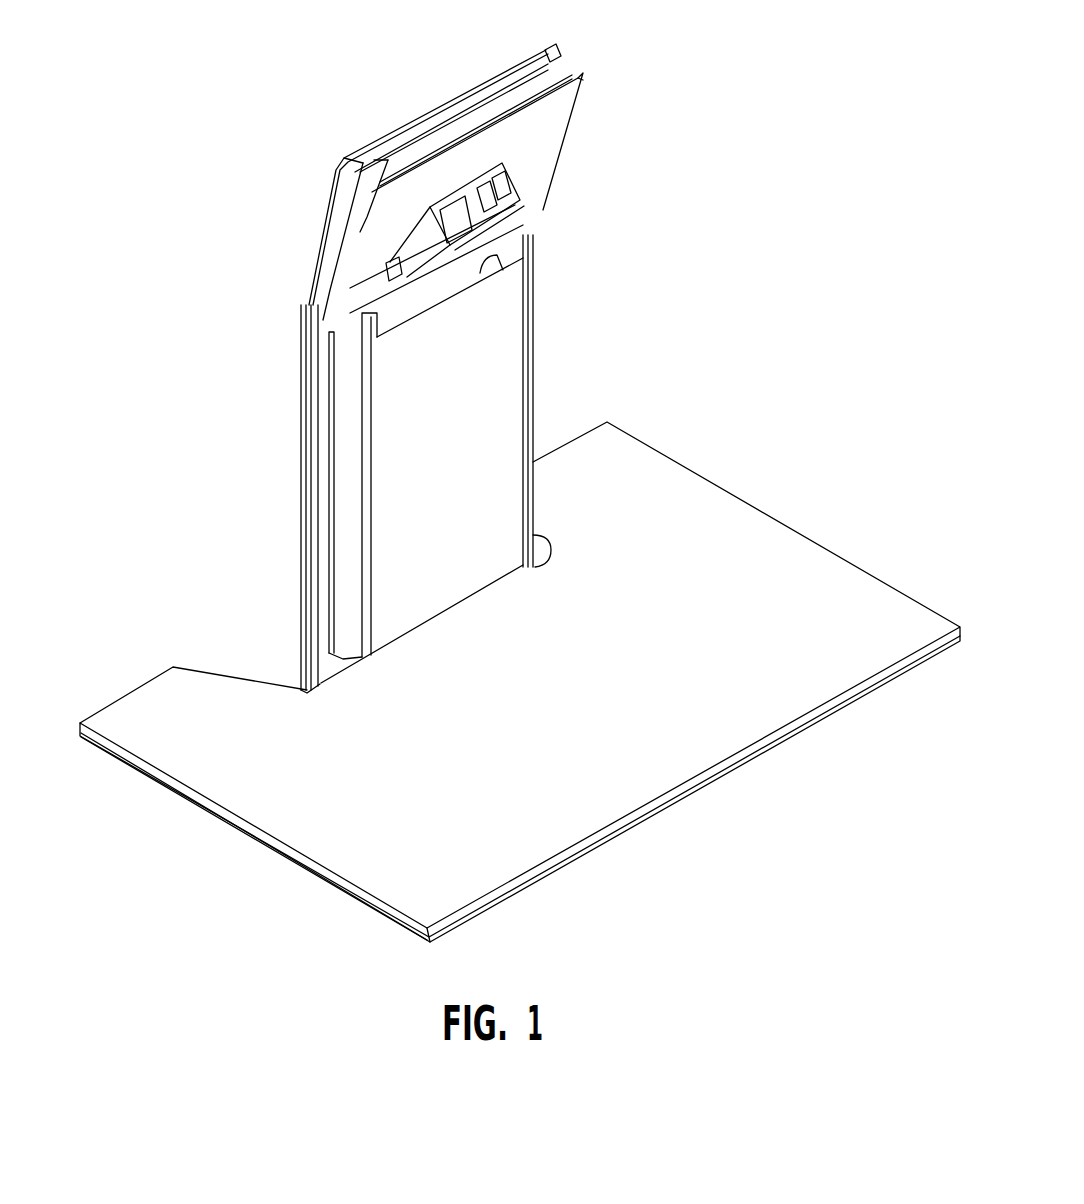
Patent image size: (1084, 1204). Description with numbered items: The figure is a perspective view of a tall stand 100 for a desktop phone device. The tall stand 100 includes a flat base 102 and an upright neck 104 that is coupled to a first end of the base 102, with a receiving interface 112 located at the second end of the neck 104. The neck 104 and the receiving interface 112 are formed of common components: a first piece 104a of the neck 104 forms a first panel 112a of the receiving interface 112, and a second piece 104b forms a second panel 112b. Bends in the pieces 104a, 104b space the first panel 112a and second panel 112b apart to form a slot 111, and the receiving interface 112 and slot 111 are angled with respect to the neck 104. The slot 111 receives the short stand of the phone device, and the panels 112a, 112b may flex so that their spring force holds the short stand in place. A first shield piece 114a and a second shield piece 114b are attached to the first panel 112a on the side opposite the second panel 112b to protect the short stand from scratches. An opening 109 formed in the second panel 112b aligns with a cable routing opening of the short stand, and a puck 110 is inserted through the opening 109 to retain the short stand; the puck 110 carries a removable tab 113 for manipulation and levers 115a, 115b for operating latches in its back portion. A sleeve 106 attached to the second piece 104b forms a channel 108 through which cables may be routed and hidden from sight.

The tall stand 100 is at (501, 484).
The base 102 is at (510, 682).
The neck 104 is at (281, 499).
The first piece 104a is at (255, 499).
The second piece 104b is at (288, 486).
The sleeve 106 is at (569, 401).
The channel 108 is at (476, 271).
The opening 109 is at (460, 205).
The puck 110 is at (554, 171).
The slot 111 is at (462, 130).
The receiving interface 112 is at (461, 173).
The first panel 112a is at (342, 160).
The second panel 112b is at (537, 138).
The tab 113 is at (564, 217).
The first shield piece 114a is at (388, 185).
The second shield piece 114b is at (606, 47).
The lever 115a is at (334, 279).
The lever 115b is at (549, 193).